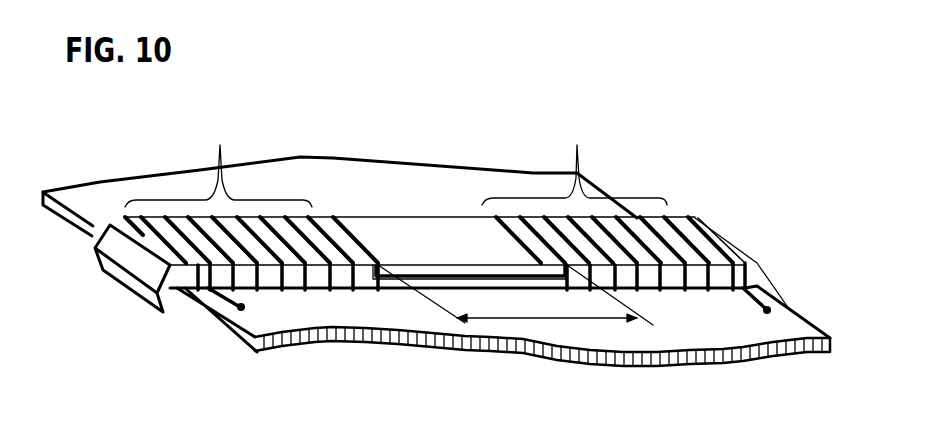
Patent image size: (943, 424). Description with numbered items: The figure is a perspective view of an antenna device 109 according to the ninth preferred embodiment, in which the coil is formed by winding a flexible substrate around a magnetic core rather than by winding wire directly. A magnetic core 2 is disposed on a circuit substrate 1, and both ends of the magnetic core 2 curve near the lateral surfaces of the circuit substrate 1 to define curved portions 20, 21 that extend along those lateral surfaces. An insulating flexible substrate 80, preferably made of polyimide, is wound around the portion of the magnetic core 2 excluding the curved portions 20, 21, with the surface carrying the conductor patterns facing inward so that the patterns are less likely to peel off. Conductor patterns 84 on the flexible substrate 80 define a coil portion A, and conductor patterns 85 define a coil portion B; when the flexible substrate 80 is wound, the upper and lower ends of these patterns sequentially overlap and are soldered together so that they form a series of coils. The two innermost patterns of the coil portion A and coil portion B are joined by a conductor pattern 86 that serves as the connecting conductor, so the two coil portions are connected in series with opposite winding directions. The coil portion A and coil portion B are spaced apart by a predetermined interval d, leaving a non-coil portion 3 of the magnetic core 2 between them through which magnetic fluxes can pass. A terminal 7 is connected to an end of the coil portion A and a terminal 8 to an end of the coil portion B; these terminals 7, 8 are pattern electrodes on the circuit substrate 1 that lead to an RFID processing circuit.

The antenna device 109 is at (99, 103).
The circuit substrate 1 is at (423, 193).
The curved portion 20 is at (97, 240).
The flexible substrate 80 is at (170, 247).
The non-coil portion 3 is at (414, 239).
The coil portion A is at (218, 163).
The coil portion B is at (574, 160).
The conductor patterns 84 is at (302, 280).
The conductor patterns 85 is at (682, 278).
The magnetic core 2 is at (358, 278).
The conductor pattern 86 is at (477, 276).
The predetermined interval d is at (515, 295).
The terminal 7 is at (237, 307).
The terminal 8 is at (764, 310).
The curved portion 21 is at (720, 232).